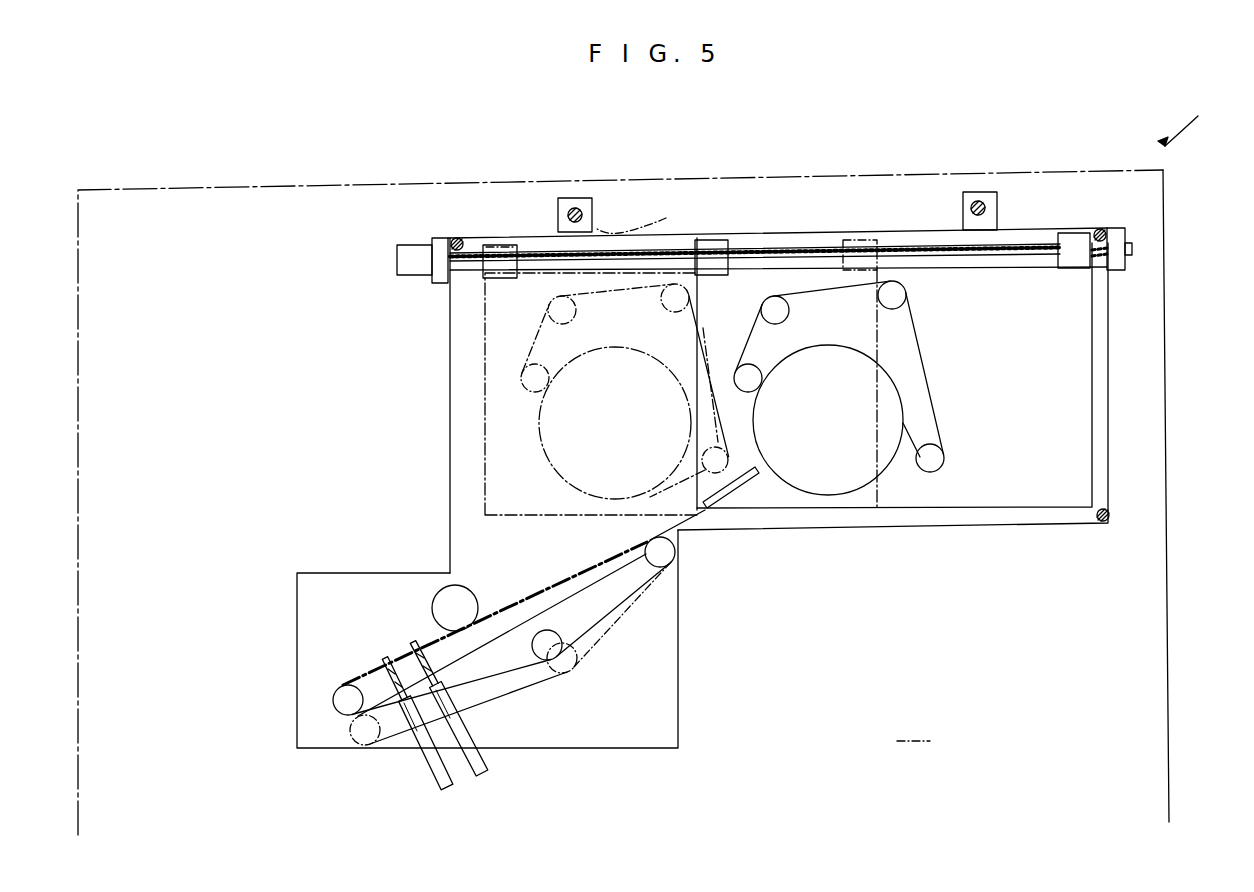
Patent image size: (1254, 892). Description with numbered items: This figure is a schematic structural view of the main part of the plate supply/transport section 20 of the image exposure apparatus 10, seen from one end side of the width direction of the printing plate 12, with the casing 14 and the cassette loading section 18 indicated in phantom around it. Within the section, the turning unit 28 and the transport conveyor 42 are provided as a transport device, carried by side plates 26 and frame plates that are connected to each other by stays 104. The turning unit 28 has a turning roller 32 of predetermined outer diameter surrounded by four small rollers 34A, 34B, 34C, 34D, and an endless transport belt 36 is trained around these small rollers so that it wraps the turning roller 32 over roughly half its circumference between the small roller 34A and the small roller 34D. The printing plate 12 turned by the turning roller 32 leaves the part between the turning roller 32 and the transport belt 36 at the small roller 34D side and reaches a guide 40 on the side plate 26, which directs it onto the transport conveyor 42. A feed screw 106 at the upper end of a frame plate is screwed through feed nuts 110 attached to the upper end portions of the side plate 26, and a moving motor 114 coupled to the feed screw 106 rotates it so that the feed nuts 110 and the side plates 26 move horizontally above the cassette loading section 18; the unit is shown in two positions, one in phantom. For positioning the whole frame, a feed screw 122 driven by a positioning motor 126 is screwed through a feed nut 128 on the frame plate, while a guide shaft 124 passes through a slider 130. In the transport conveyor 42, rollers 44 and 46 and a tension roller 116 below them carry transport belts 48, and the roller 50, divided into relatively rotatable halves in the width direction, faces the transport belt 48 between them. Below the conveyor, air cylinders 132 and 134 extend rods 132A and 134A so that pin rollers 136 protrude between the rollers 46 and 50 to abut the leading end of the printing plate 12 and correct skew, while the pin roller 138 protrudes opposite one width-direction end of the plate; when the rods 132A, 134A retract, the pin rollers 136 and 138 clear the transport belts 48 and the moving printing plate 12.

The image exposure apparatus 10 is at (1194, 122).
The printing plate 12 is at (590, 568).
The casing 14 is at (1165, 265).
The cassette loading section 18 is at (913, 727).
The plate supply/transport section 20 is at (345, 334).
The side plate 26 is at (885, 486).
The turning unit 28 is at (512, 416).
The turning roller 32 is at (605, 352).
The small roller 34A is at (750, 452).
The small roller 34B is at (676, 312).
The small roller 34C is at (550, 303).
The small roller 34D is at (528, 365).
The transport belt 36 is at (568, 322).
The guide 40 is at (738, 493).
The transport conveyor 42 is at (383, 567).
The roller 44 is at (676, 554).
The roller 46 is at (342, 687).
The transport belt 48 is at (432, 632).
The roller 50 is at (466, 586).
The stay 104 is at (457, 237).
The feed screw 106 is at (517, 252).
The feed nut 110 is at (497, 243).
The moving motor 114 is at (403, 270).
The tension roller 116 is at (552, 636).
The feed screw 122 is at (590, 215).
The guide shaft 124 is at (990, 210).
The positioning motor 126 is at (654, 216).
The feed nut 128 is at (585, 198).
The slider 130 is at (985, 192).
The air cylinder 132 is at (450, 790).
The rod 132A is at (408, 722).
The air cylinder 134 is at (489, 773).
The rod 134A is at (443, 681).
The pin roller 136 is at (383, 657).
The pin roller 138 is at (413, 643).